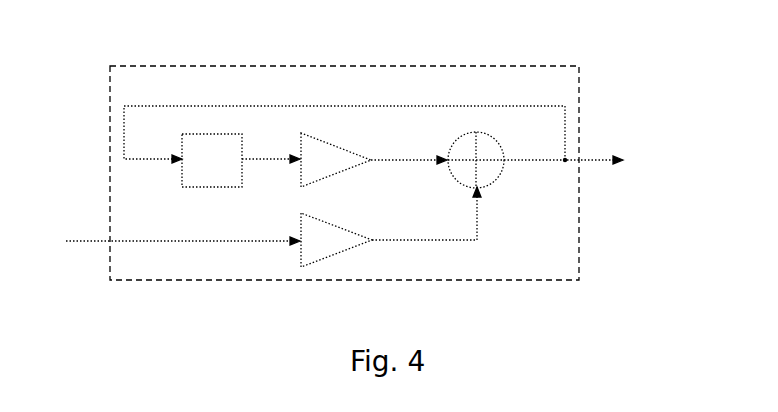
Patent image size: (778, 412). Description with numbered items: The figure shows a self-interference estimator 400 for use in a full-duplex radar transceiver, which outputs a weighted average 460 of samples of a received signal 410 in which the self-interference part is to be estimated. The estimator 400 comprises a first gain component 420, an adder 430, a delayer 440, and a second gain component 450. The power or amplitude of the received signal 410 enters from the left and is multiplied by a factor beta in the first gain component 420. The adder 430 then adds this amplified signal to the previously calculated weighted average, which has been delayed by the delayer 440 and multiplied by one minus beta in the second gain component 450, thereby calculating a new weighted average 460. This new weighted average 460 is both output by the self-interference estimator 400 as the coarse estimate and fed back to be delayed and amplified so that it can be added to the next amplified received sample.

The self-interference estimator 400 is at (116, 56).
The received signal 410 is at (172, 243).
The first gain component 420 is at (310, 263).
The adder 430 is at (498, 178).
The delayer 440 is at (180, 176).
The second gain component 450 is at (300, 176).
The weighted average 460 is at (597, 163).